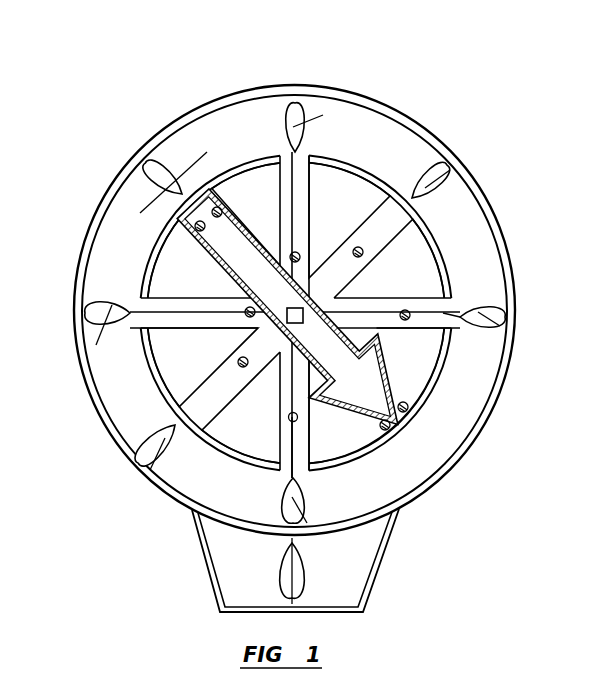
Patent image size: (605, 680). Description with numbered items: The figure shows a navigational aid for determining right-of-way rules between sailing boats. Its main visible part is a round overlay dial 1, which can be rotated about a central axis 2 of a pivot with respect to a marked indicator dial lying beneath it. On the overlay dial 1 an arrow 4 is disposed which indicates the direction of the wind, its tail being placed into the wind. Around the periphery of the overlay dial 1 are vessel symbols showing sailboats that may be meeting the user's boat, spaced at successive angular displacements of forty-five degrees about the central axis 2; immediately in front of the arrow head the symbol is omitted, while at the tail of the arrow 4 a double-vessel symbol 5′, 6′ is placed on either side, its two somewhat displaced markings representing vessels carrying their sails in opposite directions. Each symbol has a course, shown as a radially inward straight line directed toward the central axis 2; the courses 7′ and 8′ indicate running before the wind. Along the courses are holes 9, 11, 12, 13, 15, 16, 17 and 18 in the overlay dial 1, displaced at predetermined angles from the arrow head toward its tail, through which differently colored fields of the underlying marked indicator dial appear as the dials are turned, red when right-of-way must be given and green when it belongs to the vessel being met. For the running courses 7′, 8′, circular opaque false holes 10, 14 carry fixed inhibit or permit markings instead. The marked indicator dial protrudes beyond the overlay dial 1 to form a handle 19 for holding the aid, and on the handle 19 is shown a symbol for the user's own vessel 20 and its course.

The overlay dial 1 is at (465, 388).
The central axis 2 is at (370, 290).
The arrow 4 is at (309, 162).
The vessel symbol 5′ is at (147, 173).
The vessel symbol 6′ is at (159, 158).
The course 7′ is at (230, 247).
The course 8′ is at (223, 233).
The hole 9 is at (386, 426).
The false hole 10 is at (200, 227).
The hole 11 is at (297, 420).
The hole 12 is at (243, 362).
The hole 13 is at (250, 313).
The false hole 14 is at (405, 408).
The hole 15 is at (218, 205).
The hole 16 is at (408, 315).
The hole 17 is at (360, 252).
The hole 18 is at (362, 250).
The handle 19 is at (347, 562).
The user's own vessel 20 is at (290, 570).